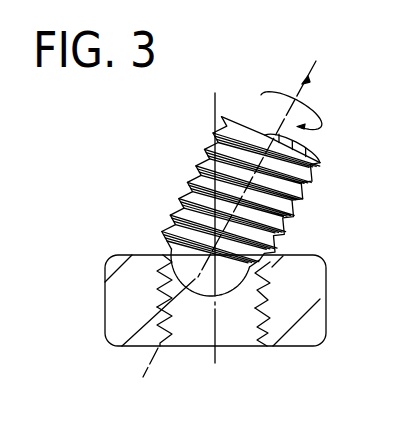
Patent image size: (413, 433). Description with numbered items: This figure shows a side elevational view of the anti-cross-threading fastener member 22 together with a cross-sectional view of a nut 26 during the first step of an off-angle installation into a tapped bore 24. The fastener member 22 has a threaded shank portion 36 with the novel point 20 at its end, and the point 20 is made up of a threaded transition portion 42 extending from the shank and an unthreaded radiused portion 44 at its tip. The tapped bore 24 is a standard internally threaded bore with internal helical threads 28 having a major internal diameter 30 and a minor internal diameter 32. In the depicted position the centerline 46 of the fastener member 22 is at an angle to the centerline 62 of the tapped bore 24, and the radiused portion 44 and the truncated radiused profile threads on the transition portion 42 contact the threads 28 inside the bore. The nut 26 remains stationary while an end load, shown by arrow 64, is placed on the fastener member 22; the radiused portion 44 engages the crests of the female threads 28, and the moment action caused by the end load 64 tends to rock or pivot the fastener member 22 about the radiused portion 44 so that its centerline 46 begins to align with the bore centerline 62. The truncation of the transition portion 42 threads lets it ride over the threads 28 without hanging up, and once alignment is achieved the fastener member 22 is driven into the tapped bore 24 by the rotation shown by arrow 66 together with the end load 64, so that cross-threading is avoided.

The point 20 is at (262, 272).
The fastener member 22 is at (181, 184).
The tapped bore 24 is at (262, 339).
The nut 26 is at (309, 338).
The internal helical threads 28 is at (259, 308).
The major internal diameter 30 is at (170, 328).
The minor internal diameter 32 is at (168, 310).
The threaded shank portion 36 is at (303, 189).
The threaded transition portion 42 is at (165, 238).
The unthreaded radiused portion 44 is at (180, 267).
The centerline of the fastener member 46 is at (310, 105).
The centerline of the tapped bore 62 is at (215, 363).
The end load arrow 64 is at (322, 62).
The rotation arrow 66 is at (284, 88).